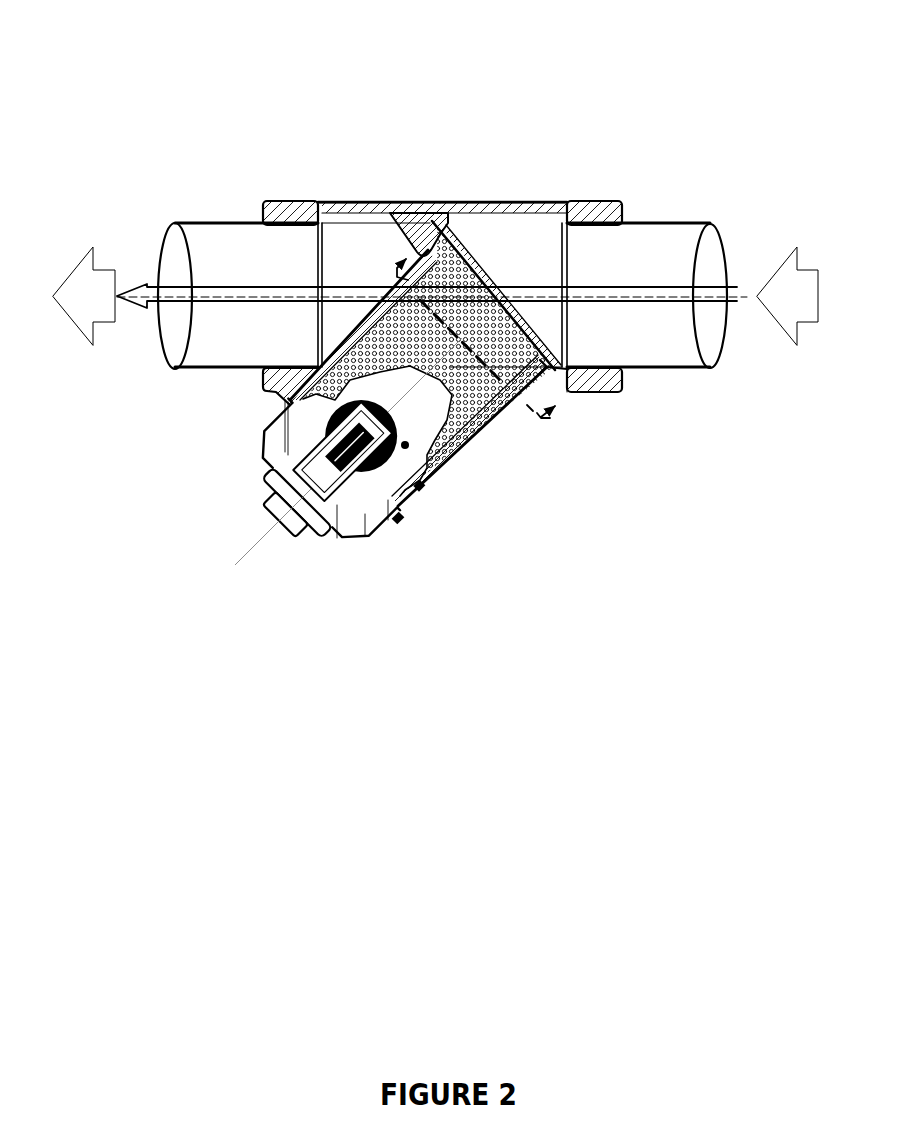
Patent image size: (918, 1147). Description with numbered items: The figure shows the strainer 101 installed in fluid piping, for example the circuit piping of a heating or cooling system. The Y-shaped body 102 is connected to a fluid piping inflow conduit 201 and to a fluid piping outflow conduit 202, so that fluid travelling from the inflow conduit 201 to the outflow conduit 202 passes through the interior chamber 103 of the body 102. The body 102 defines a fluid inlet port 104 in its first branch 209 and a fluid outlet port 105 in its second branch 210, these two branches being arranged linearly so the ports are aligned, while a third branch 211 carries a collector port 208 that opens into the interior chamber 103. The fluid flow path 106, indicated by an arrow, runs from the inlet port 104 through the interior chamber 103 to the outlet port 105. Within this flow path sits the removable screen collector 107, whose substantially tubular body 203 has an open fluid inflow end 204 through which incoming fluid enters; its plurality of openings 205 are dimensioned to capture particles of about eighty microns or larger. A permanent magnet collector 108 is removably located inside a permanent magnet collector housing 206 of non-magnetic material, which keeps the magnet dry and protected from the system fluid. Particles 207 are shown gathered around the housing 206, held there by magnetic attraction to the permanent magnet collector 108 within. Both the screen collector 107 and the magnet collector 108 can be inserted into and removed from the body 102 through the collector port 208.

The strainer 101 is at (568, 655).
The body 102 is at (592, 206).
The interior chamber 103 is at (544, 273).
The fluid inlet port 104 is at (637, 210).
The fluid outlet port 105 is at (250, 209).
The fluid flow path 106 is at (168, 296).
The screen collector 107 is at (467, 463).
The permanent magnet collector 108 is at (400, 521).
The fluid piping inflow conduit 201 is at (677, 235).
The fluid piping outflow conduit 202 is at (222, 233).
The substantially tubular body 203 is at (434, 230).
The open fluid inflow end 204 is at (459, 272).
The openings 205 is at (434, 464).
The permanent magnet collector housing 206 is at (416, 475).
The particles 207 is at (405, 445).
The collector port 208 is at (262, 399).
The first branch 209 is at (526, 191).
The second branch 210 is at (346, 190).
The third branch 211 is at (590, 458).